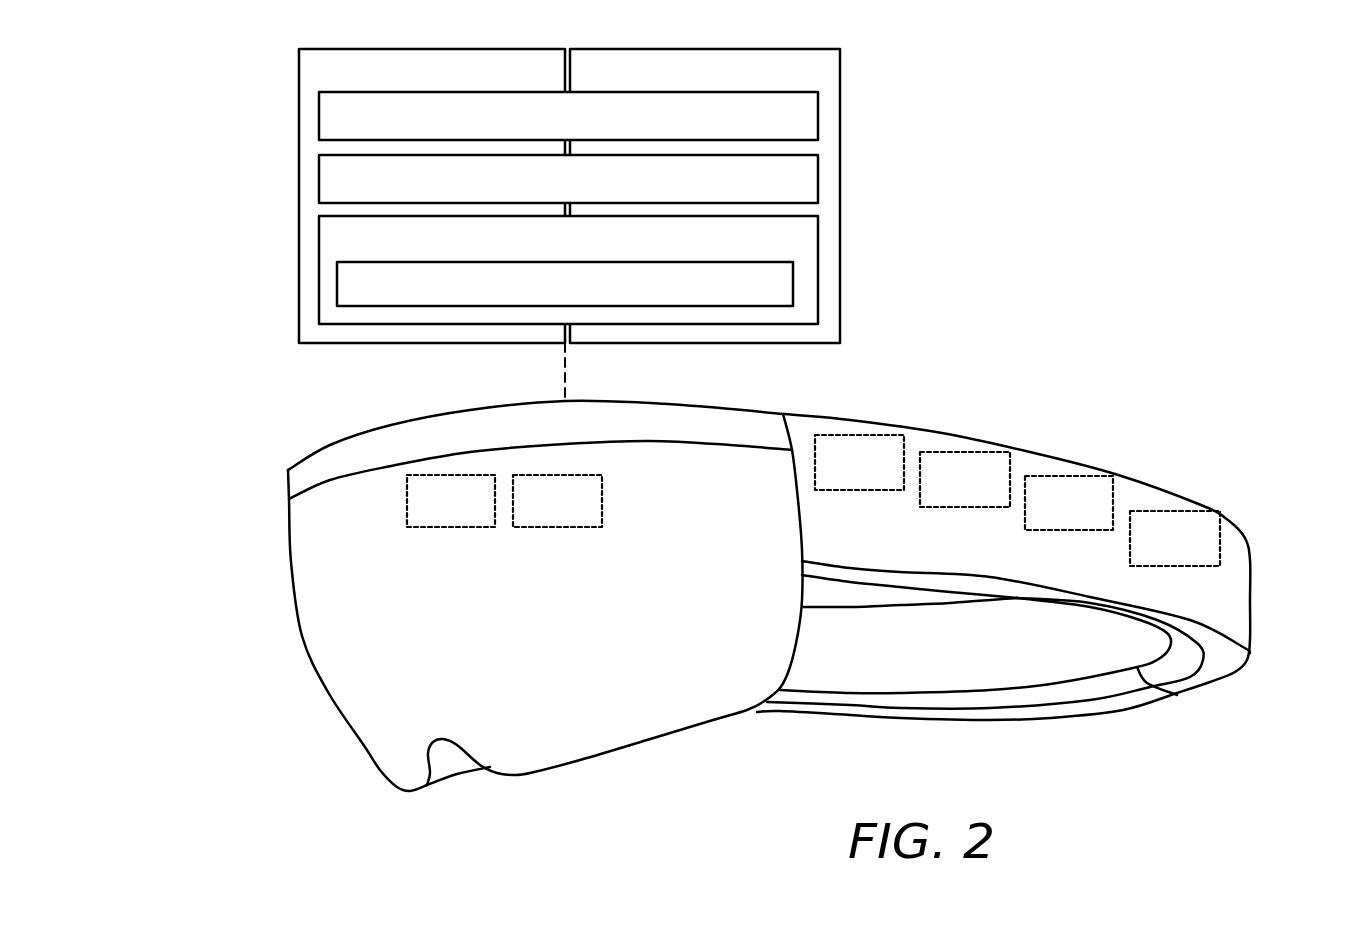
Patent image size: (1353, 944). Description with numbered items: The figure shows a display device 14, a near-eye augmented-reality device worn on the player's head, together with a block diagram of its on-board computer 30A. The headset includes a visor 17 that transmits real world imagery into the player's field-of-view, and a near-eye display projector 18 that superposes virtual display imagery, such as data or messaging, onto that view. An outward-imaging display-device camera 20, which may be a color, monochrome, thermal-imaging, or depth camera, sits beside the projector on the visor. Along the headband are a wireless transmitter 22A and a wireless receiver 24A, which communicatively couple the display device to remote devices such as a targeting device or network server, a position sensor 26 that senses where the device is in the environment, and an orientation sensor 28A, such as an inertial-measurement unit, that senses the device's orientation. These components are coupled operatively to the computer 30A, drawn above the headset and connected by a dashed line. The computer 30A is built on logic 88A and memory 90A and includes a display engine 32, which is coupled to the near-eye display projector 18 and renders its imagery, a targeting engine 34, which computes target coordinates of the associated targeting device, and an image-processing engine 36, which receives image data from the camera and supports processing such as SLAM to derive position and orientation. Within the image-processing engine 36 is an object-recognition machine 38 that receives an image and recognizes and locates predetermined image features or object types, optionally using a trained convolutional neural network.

The display device 14 is at (1264, 404).
The visor 17 is at (429, 582).
The near-eye display projector 18 is at (436, 514).
The display-device camera 20 is at (542, 514).
The wireless transmitter 22A is at (838, 474).
The wireless receiver 24A is at (942, 492).
The position sensor 26 is at (1054, 516).
The orientation sensor 28A is at (1152, 550).
The computer 30A is at (243, 320).
The display engine 32 is at (677, 128).
The targeting engine 34 is at (695, 190).
The image-processing engine 36 is at (742, 252).
The object-recognition machine 38 is at (762, 296).
The logic subsystem 88A is at (488, 84).
The memory subsystem 90A is at (780, 84).